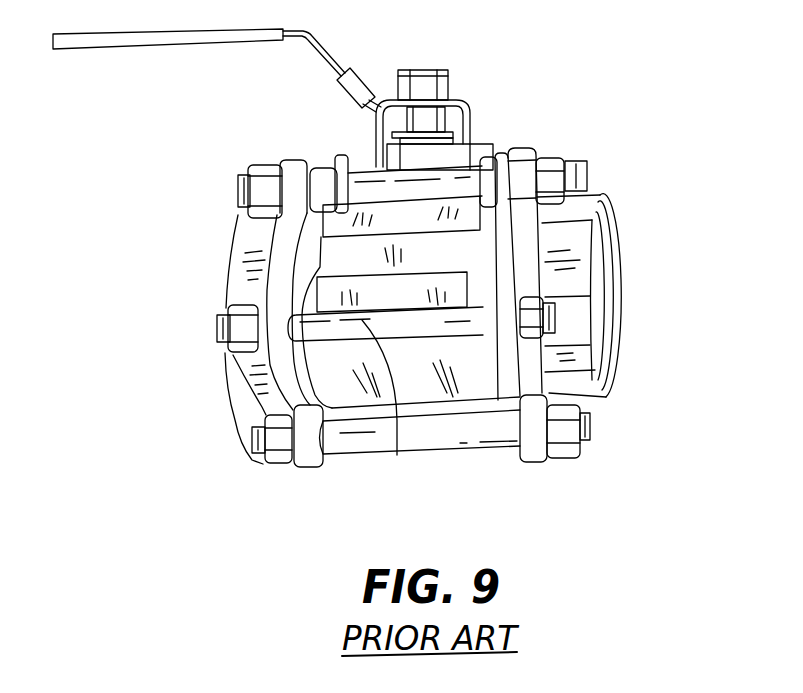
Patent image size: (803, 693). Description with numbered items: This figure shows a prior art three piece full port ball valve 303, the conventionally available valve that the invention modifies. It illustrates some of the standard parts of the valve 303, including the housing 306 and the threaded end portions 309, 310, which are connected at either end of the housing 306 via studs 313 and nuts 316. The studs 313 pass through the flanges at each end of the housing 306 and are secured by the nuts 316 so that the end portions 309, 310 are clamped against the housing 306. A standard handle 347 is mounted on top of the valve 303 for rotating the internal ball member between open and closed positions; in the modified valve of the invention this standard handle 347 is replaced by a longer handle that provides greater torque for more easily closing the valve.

The three piece full port ball valve 303 is at (483, 23).
The housing 306 is at (330, 259).
The threaded end portion 309 is at (222, 276).
The threaded end portion 310 is at (618, 258).
The studs 313 is at (447, 187).
The nuts 316 is at (550, 182).
The standard handle 347 is at (115, 48).